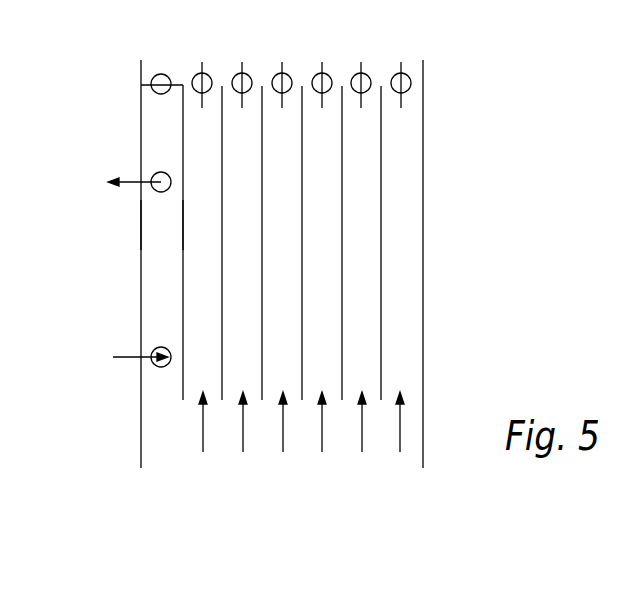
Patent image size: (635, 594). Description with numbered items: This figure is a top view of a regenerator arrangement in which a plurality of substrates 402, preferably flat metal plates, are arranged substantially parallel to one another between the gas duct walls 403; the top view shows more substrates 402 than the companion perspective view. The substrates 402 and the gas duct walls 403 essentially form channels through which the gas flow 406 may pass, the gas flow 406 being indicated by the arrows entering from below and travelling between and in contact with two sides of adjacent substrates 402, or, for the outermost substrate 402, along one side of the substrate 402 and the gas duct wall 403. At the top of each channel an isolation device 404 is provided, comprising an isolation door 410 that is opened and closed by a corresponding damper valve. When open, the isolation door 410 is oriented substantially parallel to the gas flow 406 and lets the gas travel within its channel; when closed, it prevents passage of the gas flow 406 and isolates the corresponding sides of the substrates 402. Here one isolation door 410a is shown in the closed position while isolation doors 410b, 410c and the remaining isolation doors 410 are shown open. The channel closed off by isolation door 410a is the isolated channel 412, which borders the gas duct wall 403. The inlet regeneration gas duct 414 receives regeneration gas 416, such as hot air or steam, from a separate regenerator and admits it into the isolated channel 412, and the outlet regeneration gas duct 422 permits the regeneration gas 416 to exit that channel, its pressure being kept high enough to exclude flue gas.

The substrate 402 is at (183, 380).
The gas duct wall 403 is at (141, 270).
The isolation device 404 is at (411, 78).
The gas flow 406 is at (400, 423).
The isolation door 410 is at (400, 107).
The isolation door 410a is at (151, 81).
The isolation door 410b is at (196, 75).
The isolation door 410c is at (238, 72).
The isolated channel 412 is at (163, 226).
The inlet regeneration gas duct 414 is at (160, 368).
The regeneration gas 416 is at (127, 180).
The outlet regeneration gas duct 422 is at (154, 175).